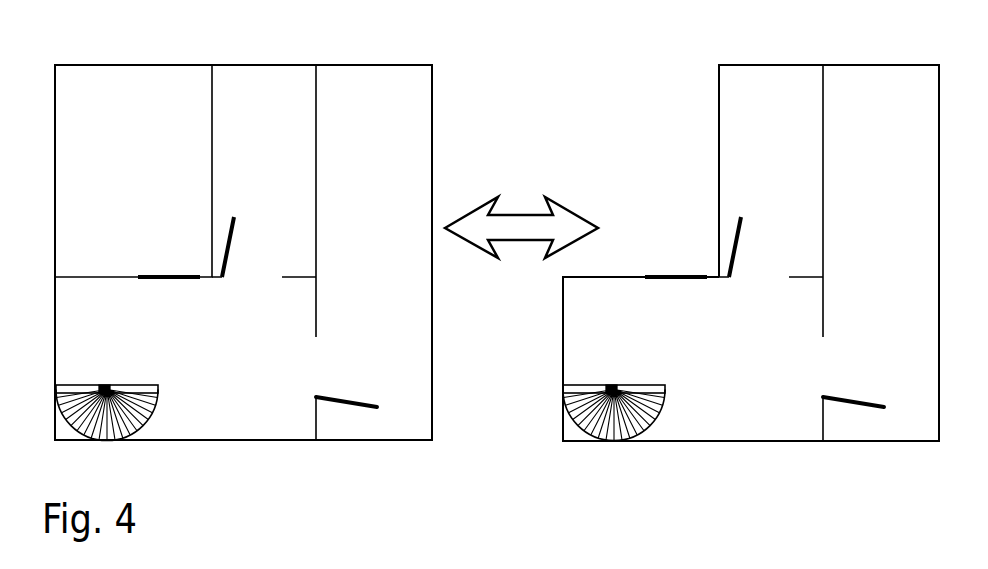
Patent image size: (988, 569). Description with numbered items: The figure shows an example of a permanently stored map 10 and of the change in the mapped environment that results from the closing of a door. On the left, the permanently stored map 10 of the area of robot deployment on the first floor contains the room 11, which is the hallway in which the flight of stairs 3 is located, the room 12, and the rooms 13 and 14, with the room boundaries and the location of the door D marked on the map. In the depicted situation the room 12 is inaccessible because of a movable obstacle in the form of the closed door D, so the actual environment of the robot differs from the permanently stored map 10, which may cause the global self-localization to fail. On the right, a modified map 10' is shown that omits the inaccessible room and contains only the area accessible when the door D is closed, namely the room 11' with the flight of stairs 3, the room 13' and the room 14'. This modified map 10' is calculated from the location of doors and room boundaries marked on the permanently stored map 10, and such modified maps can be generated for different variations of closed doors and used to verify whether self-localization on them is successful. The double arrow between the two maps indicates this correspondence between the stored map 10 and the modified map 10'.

The permanently stored map 10 is at (243, 237).
The modified map 10' is at (751, 238).
The room 11 is at (185, 388).
The room 11' is at (693, 389).
The room 12 is at (133, 171).
The room 13 is at (264, 201).
The room 13' is at (771, 201).
The room 14 is at (357, 396).
The room 14' is at (866, 396).
The door D is at (170, 275).
The flight of stairs 3 is at (76, 383).